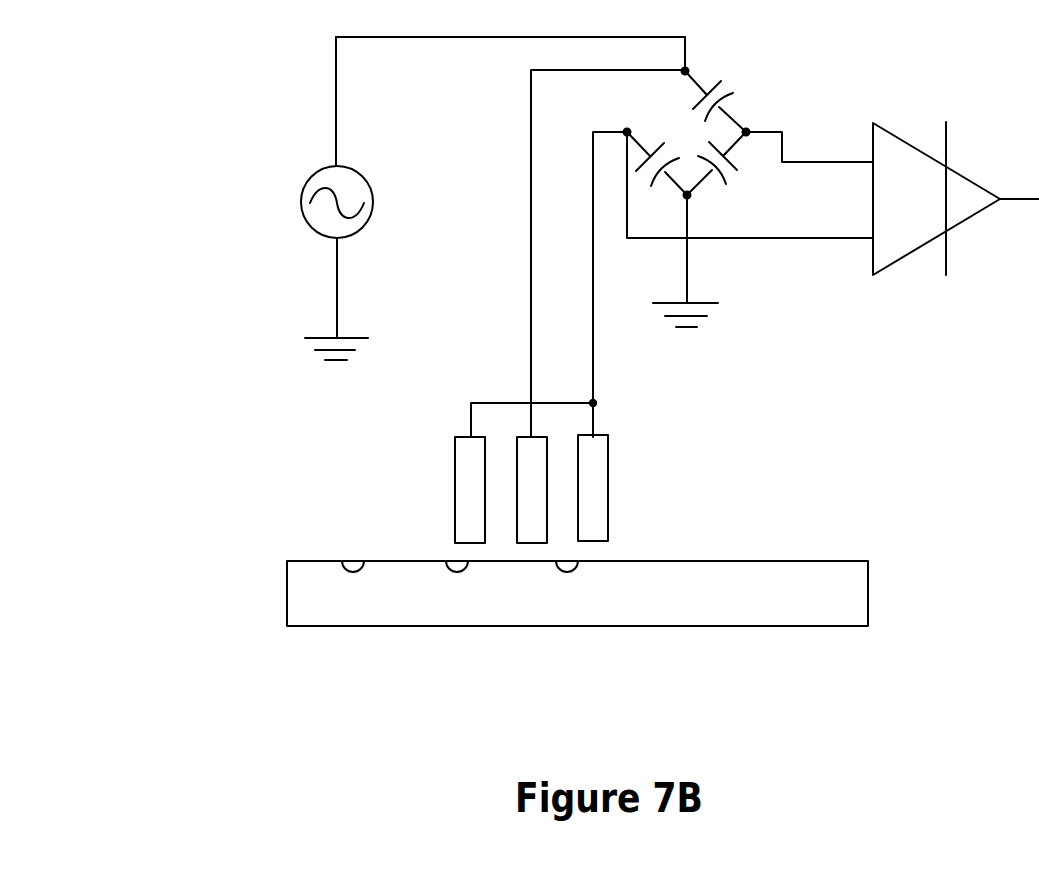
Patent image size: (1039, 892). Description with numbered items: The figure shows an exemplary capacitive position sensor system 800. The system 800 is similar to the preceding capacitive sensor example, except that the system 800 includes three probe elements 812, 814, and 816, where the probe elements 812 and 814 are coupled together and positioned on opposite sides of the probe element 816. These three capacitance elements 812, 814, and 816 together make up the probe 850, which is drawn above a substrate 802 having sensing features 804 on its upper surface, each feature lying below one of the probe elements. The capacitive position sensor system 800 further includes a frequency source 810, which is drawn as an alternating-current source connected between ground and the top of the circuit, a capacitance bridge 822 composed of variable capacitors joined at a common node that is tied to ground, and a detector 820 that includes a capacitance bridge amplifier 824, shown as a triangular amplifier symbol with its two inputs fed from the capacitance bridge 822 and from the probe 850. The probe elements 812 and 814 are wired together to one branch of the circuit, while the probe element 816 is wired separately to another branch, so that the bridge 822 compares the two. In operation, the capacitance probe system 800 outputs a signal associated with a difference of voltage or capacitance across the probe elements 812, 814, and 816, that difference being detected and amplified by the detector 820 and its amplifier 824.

The capacitive position sensor system 800 is at (293, 106).
The substrate 802 is at (258, 593).
The sensing features / dimples 804 is at (355, 558).
The frequency source 810 is at (315, 212).
The probe element 812 is at (465, 460).
The probe element 814 is at (592, 462).
The probe element 816 is at (528, 460).
The detector 820 is at (921, 117).
The capacitance bridge 822 is at (756, 88).
The capacitance bridge amplifier 824 is at (902, 215).
The probe 850 is at (542, 447).